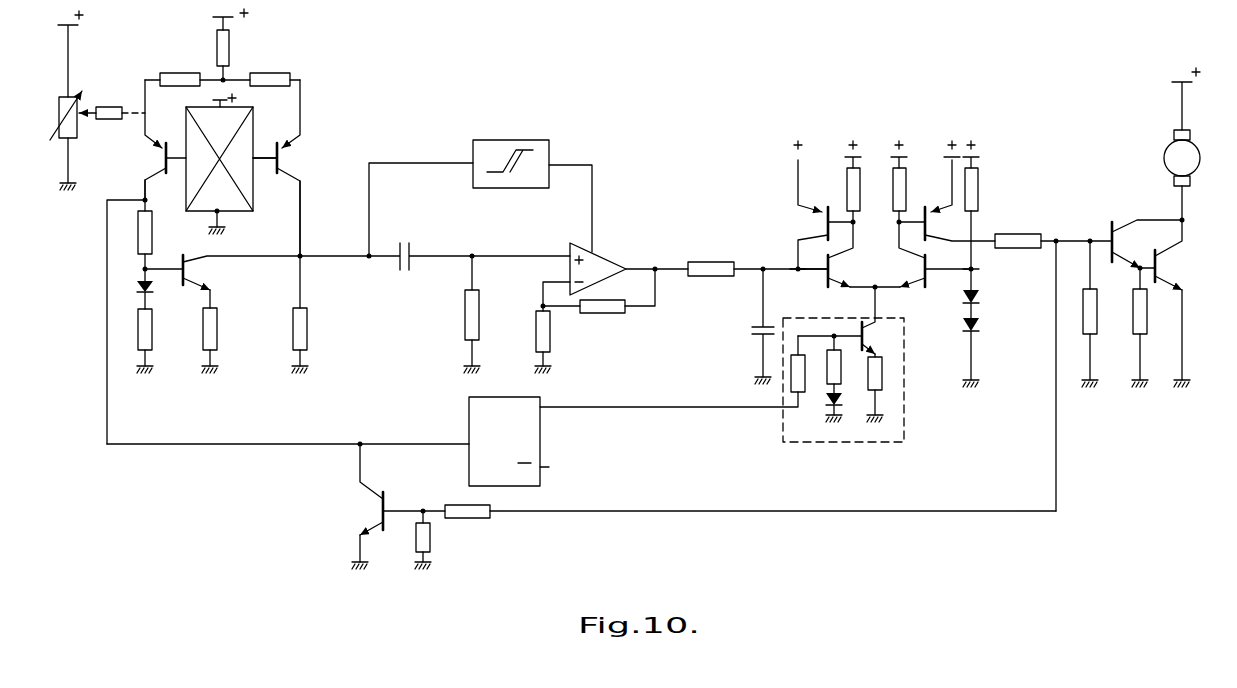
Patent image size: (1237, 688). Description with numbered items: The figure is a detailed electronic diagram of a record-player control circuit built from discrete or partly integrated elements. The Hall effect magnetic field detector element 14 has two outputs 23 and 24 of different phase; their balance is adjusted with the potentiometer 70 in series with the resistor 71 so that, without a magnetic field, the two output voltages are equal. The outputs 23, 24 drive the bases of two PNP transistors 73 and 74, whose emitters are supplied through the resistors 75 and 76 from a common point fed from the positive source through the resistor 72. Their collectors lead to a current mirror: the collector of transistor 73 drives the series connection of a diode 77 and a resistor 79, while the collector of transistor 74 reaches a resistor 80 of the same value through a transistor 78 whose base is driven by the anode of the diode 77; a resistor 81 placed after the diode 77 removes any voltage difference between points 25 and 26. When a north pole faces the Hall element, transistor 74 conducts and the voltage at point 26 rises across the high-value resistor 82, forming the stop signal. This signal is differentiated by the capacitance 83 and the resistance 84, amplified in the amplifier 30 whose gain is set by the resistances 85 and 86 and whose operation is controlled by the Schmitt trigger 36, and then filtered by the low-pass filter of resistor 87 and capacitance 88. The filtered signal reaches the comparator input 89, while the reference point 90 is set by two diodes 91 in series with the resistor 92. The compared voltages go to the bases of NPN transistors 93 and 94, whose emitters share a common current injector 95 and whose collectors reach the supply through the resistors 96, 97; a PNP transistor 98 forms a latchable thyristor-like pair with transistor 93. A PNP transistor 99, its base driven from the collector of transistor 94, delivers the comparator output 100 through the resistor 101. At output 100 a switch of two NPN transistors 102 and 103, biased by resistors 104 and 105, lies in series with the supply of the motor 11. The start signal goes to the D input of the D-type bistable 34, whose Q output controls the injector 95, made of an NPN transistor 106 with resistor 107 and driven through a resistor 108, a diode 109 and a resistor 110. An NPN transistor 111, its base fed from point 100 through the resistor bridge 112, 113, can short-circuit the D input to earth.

The motor 11 is at (1186, 156).
The Hall effect magnetic field detector element 14 is at (246, 196).
The output 23 is at (172, 160).
The output 24 is at (266, 157).
The point 25 is at (145, 201).
The point 26 is at (302, 252).
The amplifier 30 is at (602, 268).
The D-type bistable 34 is at (528, 441).
The Schmitt trigger 36 is at (493, 148).
The potentiometer 70 is at (59, 110).
The resistor 71 is at (115, 119).
The resistor 72 is at (236, 47).
The PNP transistor 73 is at (165, 152).
The PNP transistor 74 is at (281, 159).
The resistor 75 is at (173, 74).
The resistor 76 is at (277, 76).
The diode 77 is at (140, 287).
The transistor 78 is at (183, 262).
The resistor 79 is at (140, 330).
The resistor 80 is at (215, 327).
The resistor 81 is at (141, 241).
The resistor 82 is at (307, 327).
The capacitance 83 is at (406, 274).
The resistance 84 is at (466, 318).
The resistance 85 is at (610, 313).
The resistance 86 is at (546, 330).
The resistor 87 is at (712, 277).
The capacitance 88 is at (757, 336).
The input 89 is at (797, 267).
The reference voltage point 90 is at (975, 270).
The diodes 91 is at (980, 325).
The resistor 92 is at (974, 195).
The NPN transistor 93 is at (825, 285).
The NPN transistor 94 is at (926, 286).
The current injector 95 is at (891, 441).
The resistor 96 is at (851, 190).
The resistor 97 is at (900, 203).
The PNP transistor 98 is at (818, 228).
The PNP transistor 99 is at (925, 237).
The output 100 is at (1056, 240).
The resistor 101 is at (1007, 236).
The NPN transistor 102 is at (1115, 228).
The NPN transistor 103 is at (1168, 256).
The resistor 104 is at (1088, 320).
The resistor 105 is at (1147, 325).
The NPN transistor 106 is at (866, 332).
The resistor 107 is at (883, 377).
The resistor 108 is at (835, 370).
The diode 109 is at (834, 403).
The resistor 110 is at (793, 380).
The NPN transistor 111 is at (387, 498).
The resistor 112 is at (487, 514).
The resistor 113 is at (428, 534).